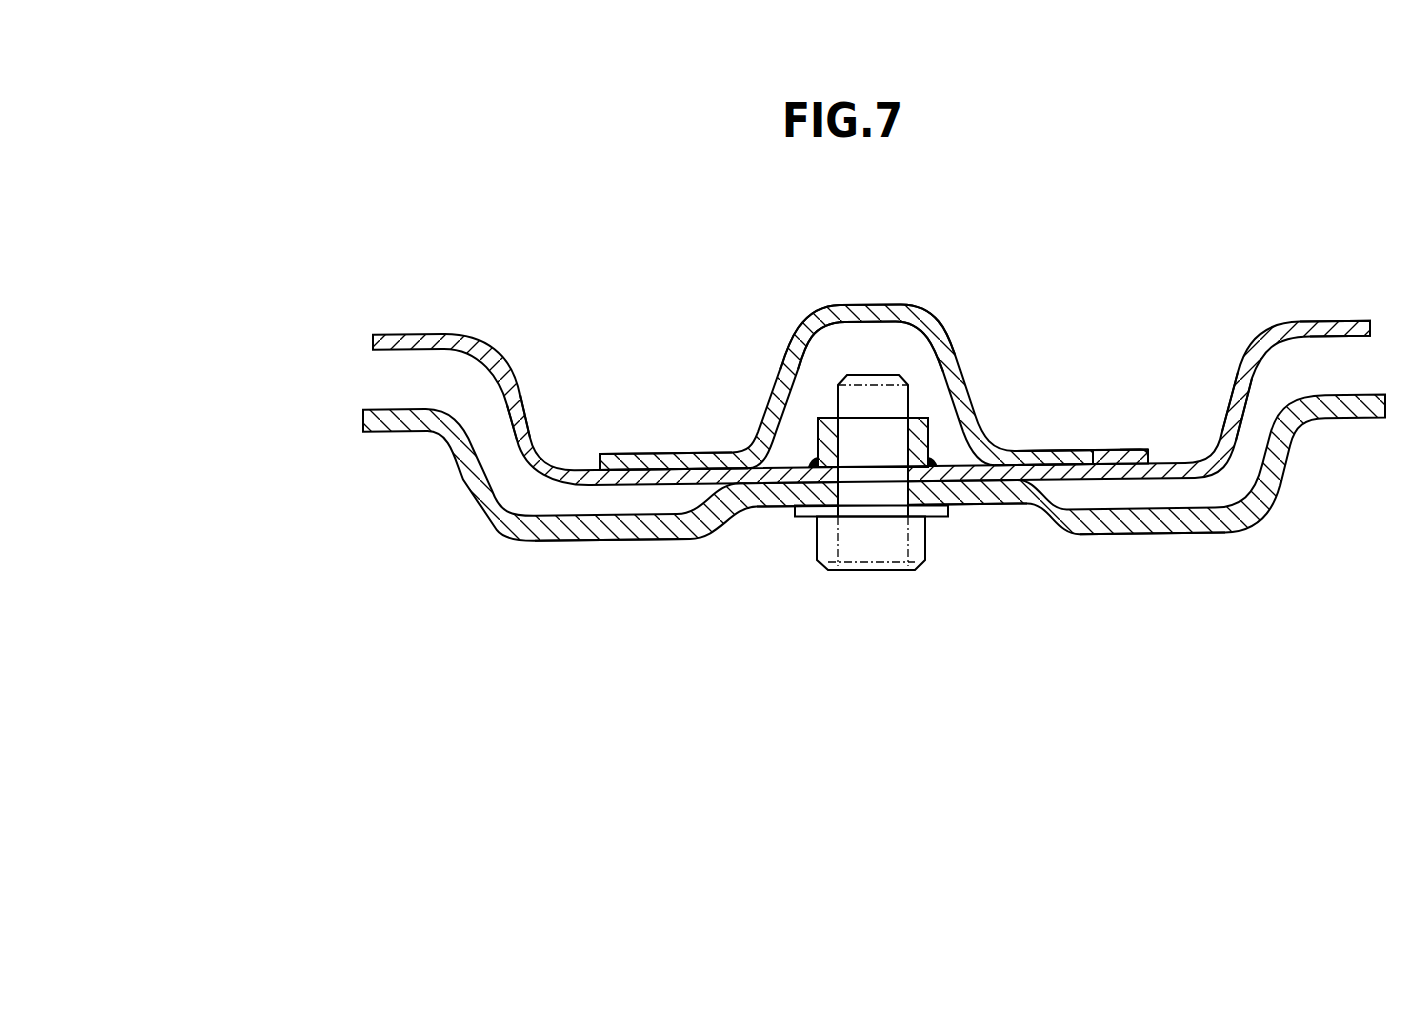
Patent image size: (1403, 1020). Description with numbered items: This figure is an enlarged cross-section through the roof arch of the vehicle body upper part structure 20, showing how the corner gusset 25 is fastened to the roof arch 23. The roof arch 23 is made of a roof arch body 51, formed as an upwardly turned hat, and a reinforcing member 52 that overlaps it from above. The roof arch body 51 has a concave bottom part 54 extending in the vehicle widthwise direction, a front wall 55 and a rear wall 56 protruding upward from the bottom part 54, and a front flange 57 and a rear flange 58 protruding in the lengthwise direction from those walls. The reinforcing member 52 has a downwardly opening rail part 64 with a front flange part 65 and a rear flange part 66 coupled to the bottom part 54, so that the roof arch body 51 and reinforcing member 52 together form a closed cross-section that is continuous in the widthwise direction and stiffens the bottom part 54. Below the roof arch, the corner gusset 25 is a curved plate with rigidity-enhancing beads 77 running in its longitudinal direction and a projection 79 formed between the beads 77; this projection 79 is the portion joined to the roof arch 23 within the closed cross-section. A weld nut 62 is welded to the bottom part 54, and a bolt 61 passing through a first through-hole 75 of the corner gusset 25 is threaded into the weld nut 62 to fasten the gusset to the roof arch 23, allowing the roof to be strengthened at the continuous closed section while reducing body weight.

The vehicle body upper part structure 20 is at (350, 104).
The roof arch 23 is at (1220, 245).
The corner gusset 25 is at (355, 424).
The roof arch body 51 is at (1096, 445).
The reinforcing member 52 is at (1045, 445).
The bottom part 54 is at (688, 469).
The front wall 55 is at (527, 408).
The rear wall 56 is at (1226, 372).
The front flange 57 is at (410, 337).
The rear flange 58 is at (1340, 321).
The bolt 61 is at (862, 572).
The weld nut 62 is at (920, 418).
The rail part 64 is at (862, 305).
The front flange part 65 is at (660, 453).
The rear flange part 66 is at (1130, 450).
The first through-hole 75 is at (913, 502).
The rigidity-enhancing bead 77 is at (585, 540).
The projection 79 is at (783, 500).